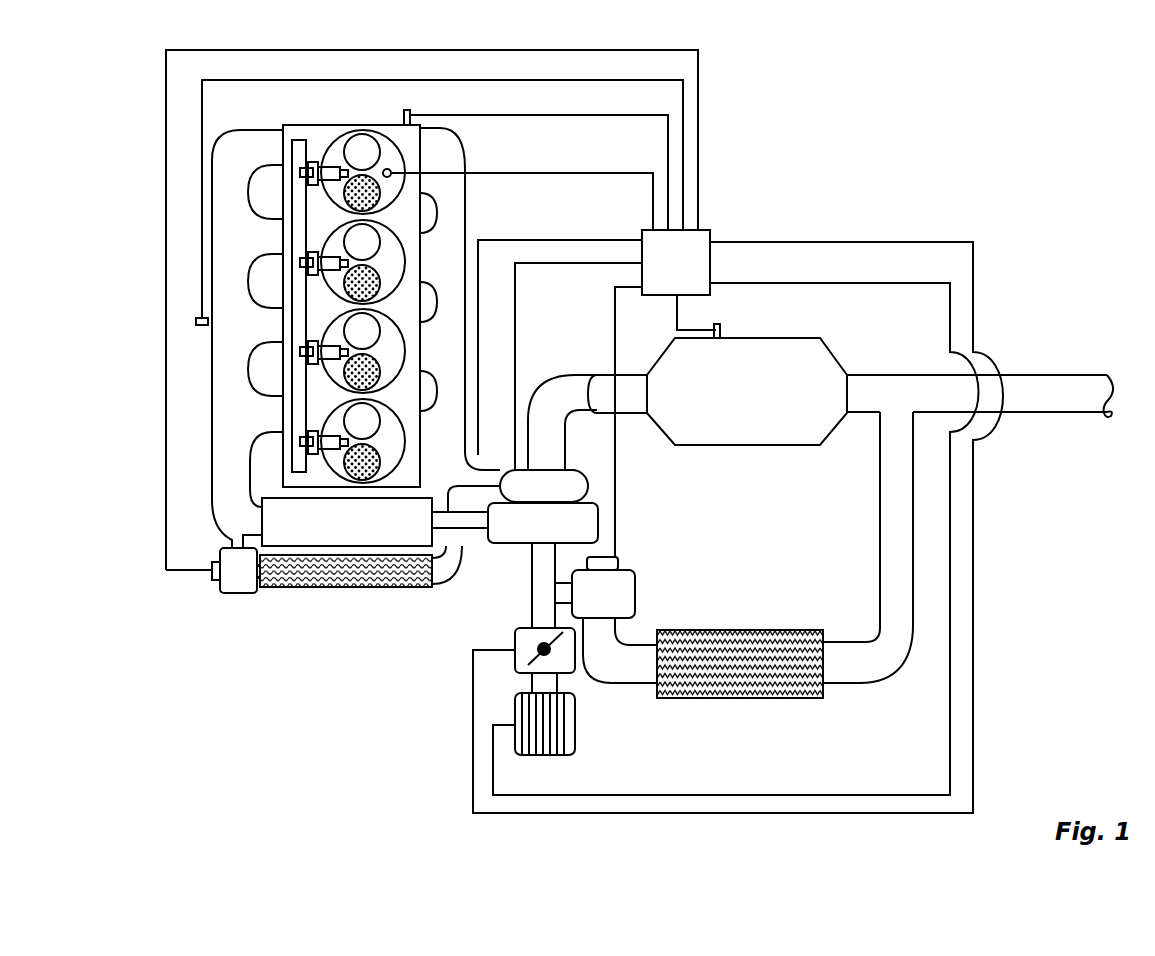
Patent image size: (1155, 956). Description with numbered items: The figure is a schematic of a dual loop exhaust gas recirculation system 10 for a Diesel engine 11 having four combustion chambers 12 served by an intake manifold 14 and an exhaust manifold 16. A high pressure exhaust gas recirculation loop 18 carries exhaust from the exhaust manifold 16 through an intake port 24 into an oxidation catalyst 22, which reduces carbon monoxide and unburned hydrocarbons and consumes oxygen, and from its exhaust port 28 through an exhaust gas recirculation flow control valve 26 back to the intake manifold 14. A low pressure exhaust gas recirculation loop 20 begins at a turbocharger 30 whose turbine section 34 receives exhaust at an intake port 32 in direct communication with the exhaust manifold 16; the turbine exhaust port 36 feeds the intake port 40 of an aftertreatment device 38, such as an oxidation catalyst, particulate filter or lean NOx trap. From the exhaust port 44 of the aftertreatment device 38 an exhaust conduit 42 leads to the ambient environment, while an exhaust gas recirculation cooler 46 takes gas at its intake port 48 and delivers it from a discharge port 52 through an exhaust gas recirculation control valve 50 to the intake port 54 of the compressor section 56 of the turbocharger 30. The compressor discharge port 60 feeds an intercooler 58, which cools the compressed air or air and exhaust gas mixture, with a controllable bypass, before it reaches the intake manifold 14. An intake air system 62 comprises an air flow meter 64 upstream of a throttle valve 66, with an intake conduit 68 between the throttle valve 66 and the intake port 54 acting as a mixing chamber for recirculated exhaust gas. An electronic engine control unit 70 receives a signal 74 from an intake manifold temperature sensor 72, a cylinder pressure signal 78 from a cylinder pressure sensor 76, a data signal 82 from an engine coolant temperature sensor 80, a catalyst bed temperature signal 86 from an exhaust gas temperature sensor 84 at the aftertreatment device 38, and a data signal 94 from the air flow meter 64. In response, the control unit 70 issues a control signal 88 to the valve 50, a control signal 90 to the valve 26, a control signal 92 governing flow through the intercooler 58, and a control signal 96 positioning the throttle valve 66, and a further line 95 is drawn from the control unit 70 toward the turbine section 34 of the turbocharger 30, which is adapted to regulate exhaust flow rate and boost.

The dual loop exhaust gas recirculation system 10 is at (762, 106).
The engine 11 is at (325, 135).
The combustion chambers 12 is at (383, 150).
The intake manifold 14 is at (228, 338).
The exhaust manifold 16 is at (429, 355).
The high pressure exhaust gas recirculation loop 18 is at (268, 655).
The low pressure exhaust gas recirculation loop 20 is at (799, 715).
The oxidation catalyst 22 is at (312, 586).
The intake port 24 is at (434, 574).
The exhaust gas recirculation flow control valve 26 is at (228, 596).
The exhaust port 28 is at (265, 573).
The turbocharger 30 is at (632, 498).
The intake port of turbine section 32 is at (490, 478).
The turbine section 34 is at (531, 499).
The exhaust port of turbine section 36 is at (545, 468).
The aftertreatment device 38 is at (733, 406).
The intake port of aftertreatment device 40 is at (648, 393).
The exhaust conduit 42 is at (1038, 375).
The exhaust port of aftertreatment device 44 is at (847, 393).
The exhaust gas recirculation cooler 46 is at (725, 630).
The intake port of exhaust gas recirculation cooler 48 is at (824, 661).
The exhaust gas recirculation control valve 50 is at (589, 607).
The discharge port 52 is at (657, 663).
The intake port of compressor section 54 is at (545, 540).
The compressor section 56 is at (529, 531).
The intercooler 58 is at (329, 533).
The discharge port of compressor section 60 is at (492, 525).
The intake air system 62 is at (456, 741).
The air flow meter 64 is at (577, 732).
The throttle valve 66 is at (578, 663).
The intake conduit 68 is at (536, 585).
The electronic engine control unit 70 is at (662, 275).
The intake manifold temperature sensor 72 is at (198, 323).
The signal 74 is at (202, 158).
The cylinder pressure sensor 76 is at (392, 172).
The cylinder pressure signal 78 is at (578, 172).
The engine coolant temperature sensor 80 is at (410, 108).
The data signal 82 is at (578, 115).
The exhaust sensor 84 is at (722, 333).
The sensor signal line 86 is at (672, 310).
The control signal 88 is at (612, 312).
The control signal 90 is at (168, 193).
The control signal 92 is at (578, 238).
The data signal 94 is at (733, 793).
The control line 95 is at (515, 312).
The control signal 96 is at (975, 615).